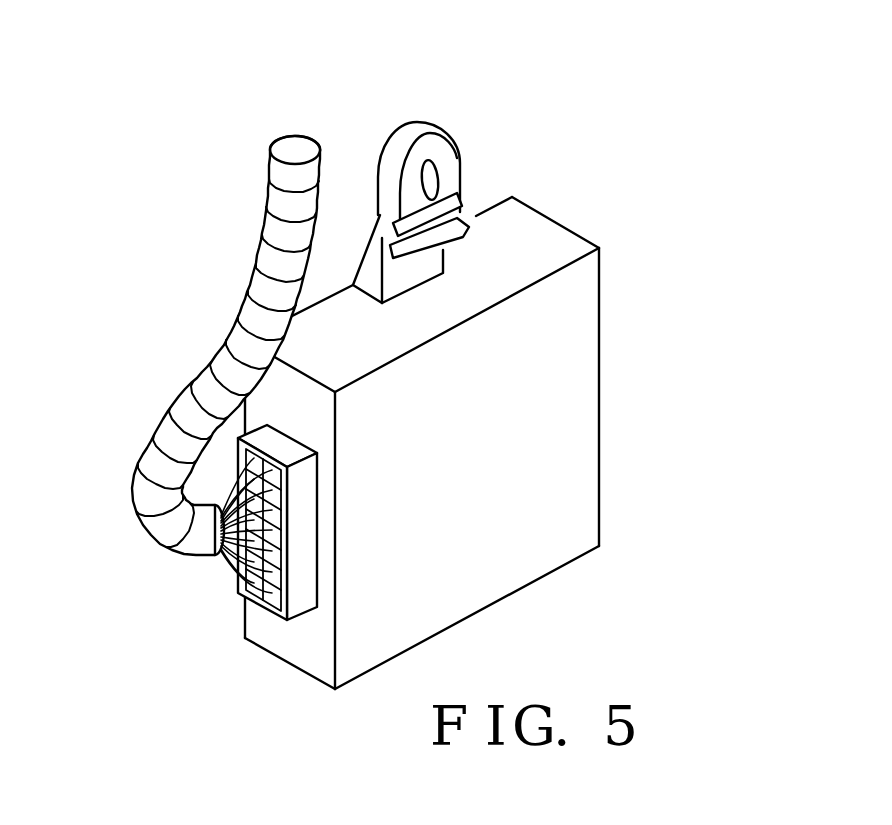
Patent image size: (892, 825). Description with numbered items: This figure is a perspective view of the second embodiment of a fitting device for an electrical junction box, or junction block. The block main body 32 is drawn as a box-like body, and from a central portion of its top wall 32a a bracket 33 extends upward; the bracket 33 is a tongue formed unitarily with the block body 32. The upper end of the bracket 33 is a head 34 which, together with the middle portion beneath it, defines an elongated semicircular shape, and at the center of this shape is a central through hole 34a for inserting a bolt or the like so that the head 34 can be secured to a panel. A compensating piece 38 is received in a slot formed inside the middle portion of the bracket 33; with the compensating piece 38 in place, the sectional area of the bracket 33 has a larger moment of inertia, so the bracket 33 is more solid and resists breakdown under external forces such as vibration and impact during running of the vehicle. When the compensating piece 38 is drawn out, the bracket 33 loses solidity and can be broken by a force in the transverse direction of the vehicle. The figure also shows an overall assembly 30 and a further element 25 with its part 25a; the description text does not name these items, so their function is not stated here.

The electronic control unit 30 is at (756, 104).
The block main body 32 is at (616, 268).
The top wall 32a is at (553, 235).
The bracket 33 is at (380, 213).
The head 34 is at (463, 143).
The central through hole 34a is at (437, 160).
The compensating piece 38 is at (477, 222).
The wire harness tube 25 is at (273, 250).
The connector 25a is at (262, 430).